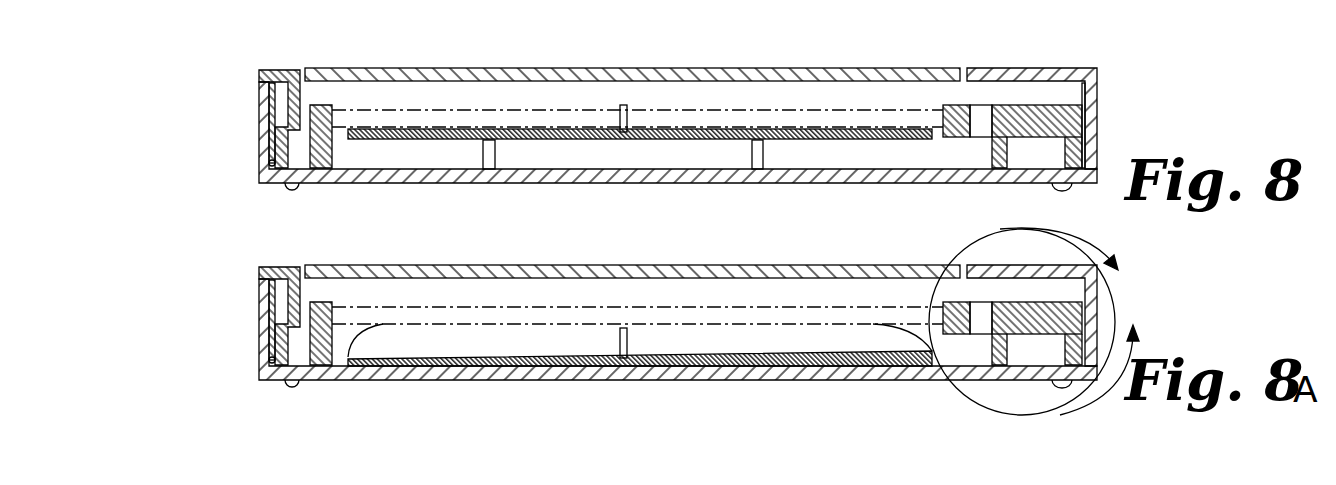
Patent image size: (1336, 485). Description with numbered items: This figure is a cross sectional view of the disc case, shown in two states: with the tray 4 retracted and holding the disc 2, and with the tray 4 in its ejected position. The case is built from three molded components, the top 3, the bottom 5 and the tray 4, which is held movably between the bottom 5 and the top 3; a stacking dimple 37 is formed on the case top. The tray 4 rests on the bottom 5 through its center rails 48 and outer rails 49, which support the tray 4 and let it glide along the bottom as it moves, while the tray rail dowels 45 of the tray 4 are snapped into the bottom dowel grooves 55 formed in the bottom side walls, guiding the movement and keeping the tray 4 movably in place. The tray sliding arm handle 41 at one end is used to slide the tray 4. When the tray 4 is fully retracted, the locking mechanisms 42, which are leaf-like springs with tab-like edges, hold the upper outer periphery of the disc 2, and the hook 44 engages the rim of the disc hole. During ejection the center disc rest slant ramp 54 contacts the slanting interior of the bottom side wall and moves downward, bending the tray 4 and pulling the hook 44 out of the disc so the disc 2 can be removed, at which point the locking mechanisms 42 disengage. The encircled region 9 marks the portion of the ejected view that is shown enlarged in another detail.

In FIG. 8, the disc 2 is at (733, 110).
In FIG. 8A, the disc 2 is at (637, 269).
In FIG. 8, the top 3 is at (823, 68).
In FIG. 8A, the top 3 is at (632, 246).
In FIG. 8, the tray 4 is at (1000, 105).
In FIG. 8A, the tray 4 is at (1021, 270).
In FIG. 8, the bottom 5 is at (690, 183).
In FIG. 8A, the bottom 5 is at (678, 344).
In FIG. 8A, the detail circle 9 is at (1035, 321).
In FIG. 8, the stacking dimple 37 is at (1073, 70).
In FIG. 8A, the stacking dimple 37 is at (1032, 283).
In FIG. 8, the tray sliding arm handle 41 is at (290, 70).
In FIG. 8A, the tray sliding arm handle 41 is at (260, 292).
In FIG. 8, the locking mechanism 42 is at (332, 105).
In FIG. 8A, the locking mechanism 42 is at (651, 279).
In FIG. 8, the hook 44 is at (623, 105).
In FIG. 8A, the hook 44 is at (641, 291).
In FIG. 8, the tray rail dowels 45 is at (270, 160).
In FIG. 8A, the tray rail dowels 45 is at (229, 321).
In FIG. 8, the center rails 48 is at (485, 155).
In FIG. 8, the outer rails 49 is at (338, 157).
In FIG. 8A, the outer rails 49 is at (696, 372).
In FIG. 8, the center disc rest slant ramp 54 is at (550, 129).
In FIG. 8A, the center disc rest slant ramp 54 is at (640, 291).
In FIG. 8, the bottom dowel grooves 55 is at (268, 178).
In FIG. 8A, the bottom dowel grooves 55 is at (248, 392).